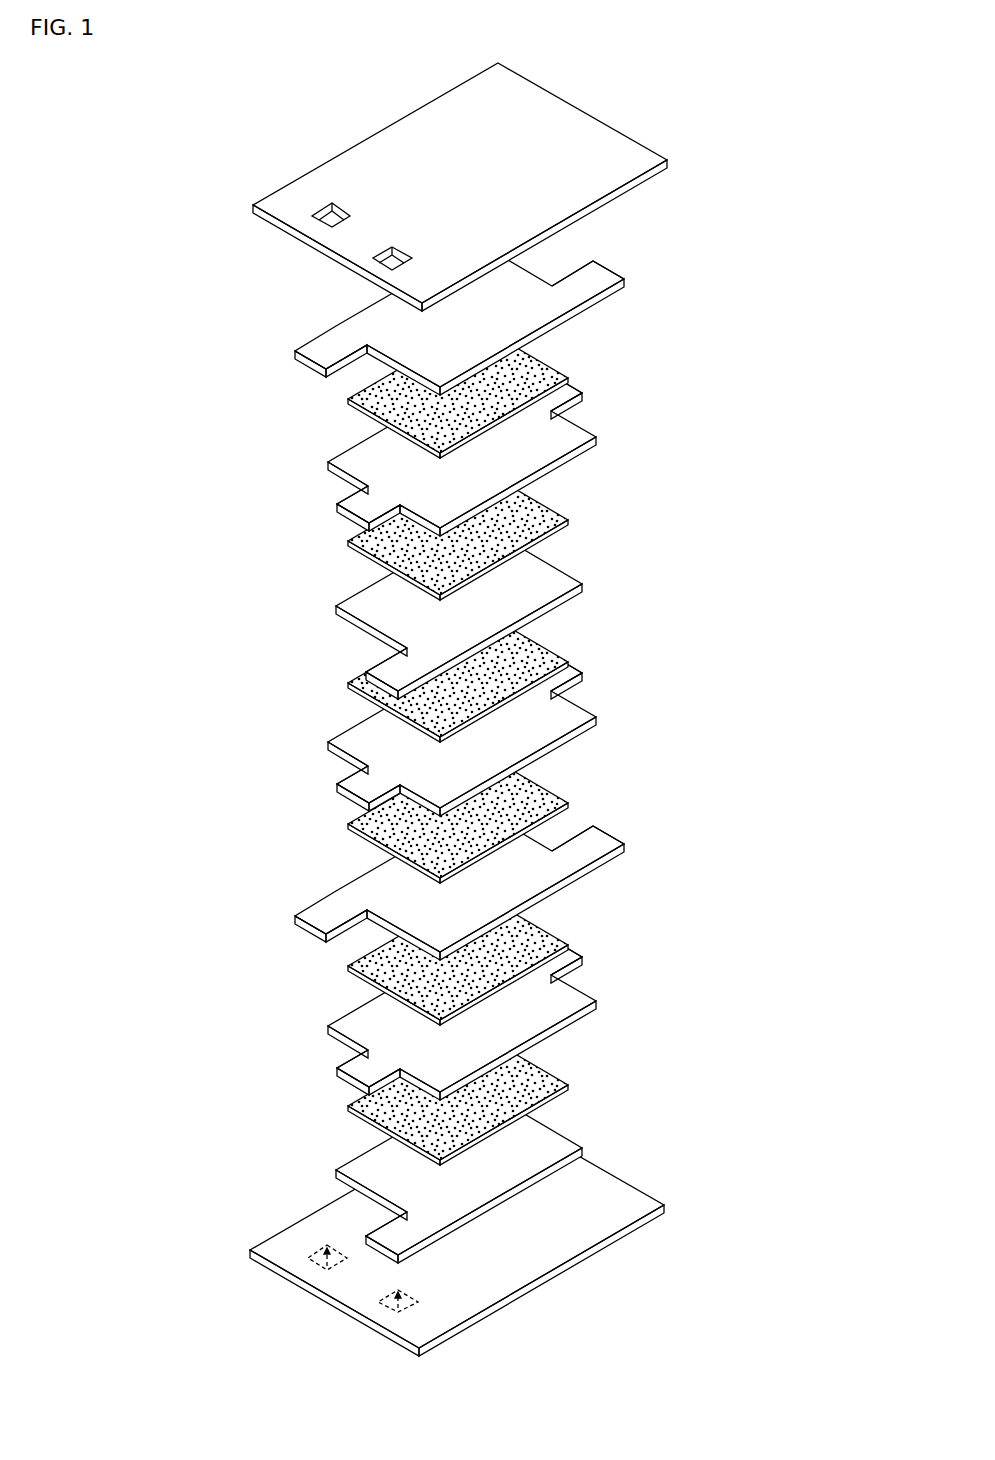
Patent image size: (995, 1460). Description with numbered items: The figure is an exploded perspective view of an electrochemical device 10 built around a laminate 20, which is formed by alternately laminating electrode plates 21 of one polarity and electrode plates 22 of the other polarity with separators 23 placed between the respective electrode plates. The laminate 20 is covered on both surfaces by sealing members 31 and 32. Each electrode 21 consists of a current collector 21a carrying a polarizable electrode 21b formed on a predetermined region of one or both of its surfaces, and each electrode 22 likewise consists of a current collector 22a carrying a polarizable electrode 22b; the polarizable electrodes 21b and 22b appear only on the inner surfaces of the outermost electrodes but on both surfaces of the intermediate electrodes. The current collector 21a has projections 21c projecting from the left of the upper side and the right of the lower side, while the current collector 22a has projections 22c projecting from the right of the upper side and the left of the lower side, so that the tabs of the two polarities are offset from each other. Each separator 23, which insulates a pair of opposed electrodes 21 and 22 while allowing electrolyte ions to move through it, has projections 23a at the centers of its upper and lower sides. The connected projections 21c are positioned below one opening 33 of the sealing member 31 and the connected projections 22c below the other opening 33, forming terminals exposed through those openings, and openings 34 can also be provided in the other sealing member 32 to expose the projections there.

The electrochemical device 10 is at (185, 350).
The laminate 20 is at (511, 778).
The electrode plate of one polarity 21 is at (500, 905).
The current collector 21a is at (475, 934).
The polarizable electrode 21b is at (535, 1072).
The projection 21c is at (377, 1248).
The electrode plate of the other polarity 22 is at (480, 622).
The current collector 22a is at (455, 590).
The polarizable electrode 22b is at (540, 782).
The projection 22c is at (613, 838).
The separator 23 is at (468, 735).
The projection 23a is at (585, 960).
The sealing member 31 is at (460, 187).
The sealing member 32 is at (464, 1234).
The opening 33 is at (340, 211).
The opening 34 is at (300, 1272).